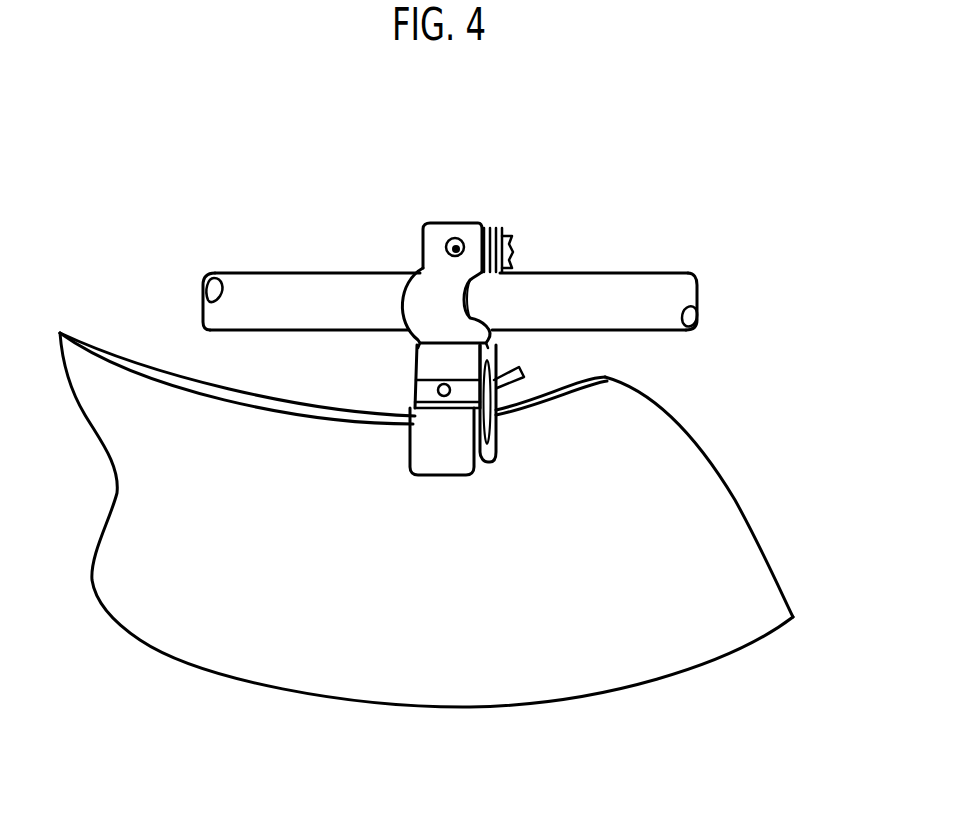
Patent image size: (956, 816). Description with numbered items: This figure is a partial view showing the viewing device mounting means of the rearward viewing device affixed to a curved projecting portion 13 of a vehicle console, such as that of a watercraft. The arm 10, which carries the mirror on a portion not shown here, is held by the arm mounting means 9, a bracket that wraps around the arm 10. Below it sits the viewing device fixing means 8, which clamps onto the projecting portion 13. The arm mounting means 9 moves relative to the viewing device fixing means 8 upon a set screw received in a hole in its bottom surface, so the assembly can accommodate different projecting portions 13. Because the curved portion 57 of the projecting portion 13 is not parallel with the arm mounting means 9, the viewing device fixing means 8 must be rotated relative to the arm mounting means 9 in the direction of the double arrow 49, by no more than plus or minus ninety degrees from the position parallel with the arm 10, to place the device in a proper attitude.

The viewing device fixing means 8 is at (447, 368).
The arm mounting means 9 is at (463, 240).
The arm 10 is at (558, 297).
The projecting portion 13 is at (692, 518).
The double arrow 49 is at (393, 450).
The curved portion 57 is at (325, 415).